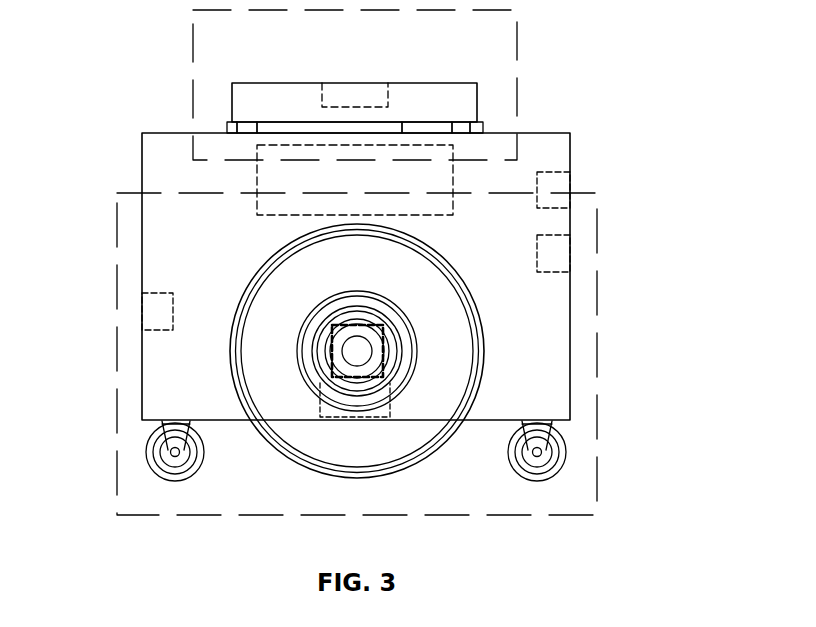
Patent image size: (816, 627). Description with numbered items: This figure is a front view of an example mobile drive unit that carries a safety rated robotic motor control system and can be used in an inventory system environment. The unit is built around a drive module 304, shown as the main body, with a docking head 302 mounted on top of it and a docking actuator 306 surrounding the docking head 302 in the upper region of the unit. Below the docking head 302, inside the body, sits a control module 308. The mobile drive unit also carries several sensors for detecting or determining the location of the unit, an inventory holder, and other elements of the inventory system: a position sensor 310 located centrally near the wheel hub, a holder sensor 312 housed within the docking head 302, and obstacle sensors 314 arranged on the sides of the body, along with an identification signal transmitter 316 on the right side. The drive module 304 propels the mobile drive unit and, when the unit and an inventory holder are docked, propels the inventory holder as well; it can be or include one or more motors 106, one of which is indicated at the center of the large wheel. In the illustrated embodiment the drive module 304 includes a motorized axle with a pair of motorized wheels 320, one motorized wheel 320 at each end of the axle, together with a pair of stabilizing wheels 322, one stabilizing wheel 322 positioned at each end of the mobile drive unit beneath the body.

The motor 106 is at (351, 325).
The docking head 302 is at (286, 83).
The drive module 304 is at (597, 293).
The docking actuator 306 is at (517, 58).
The control module 308 is at (257, 208).
The position sensor 310 is at (362, 378).
The holder sensor 312 is at (390, 103).
The obstacle sensor 314 is at (173, 293).
The identification signal transmitter 316 is at (537, 200).
The motorized wheel 320 is at (233, 362).
The stabilizing wheel 322 is at (146, 452).